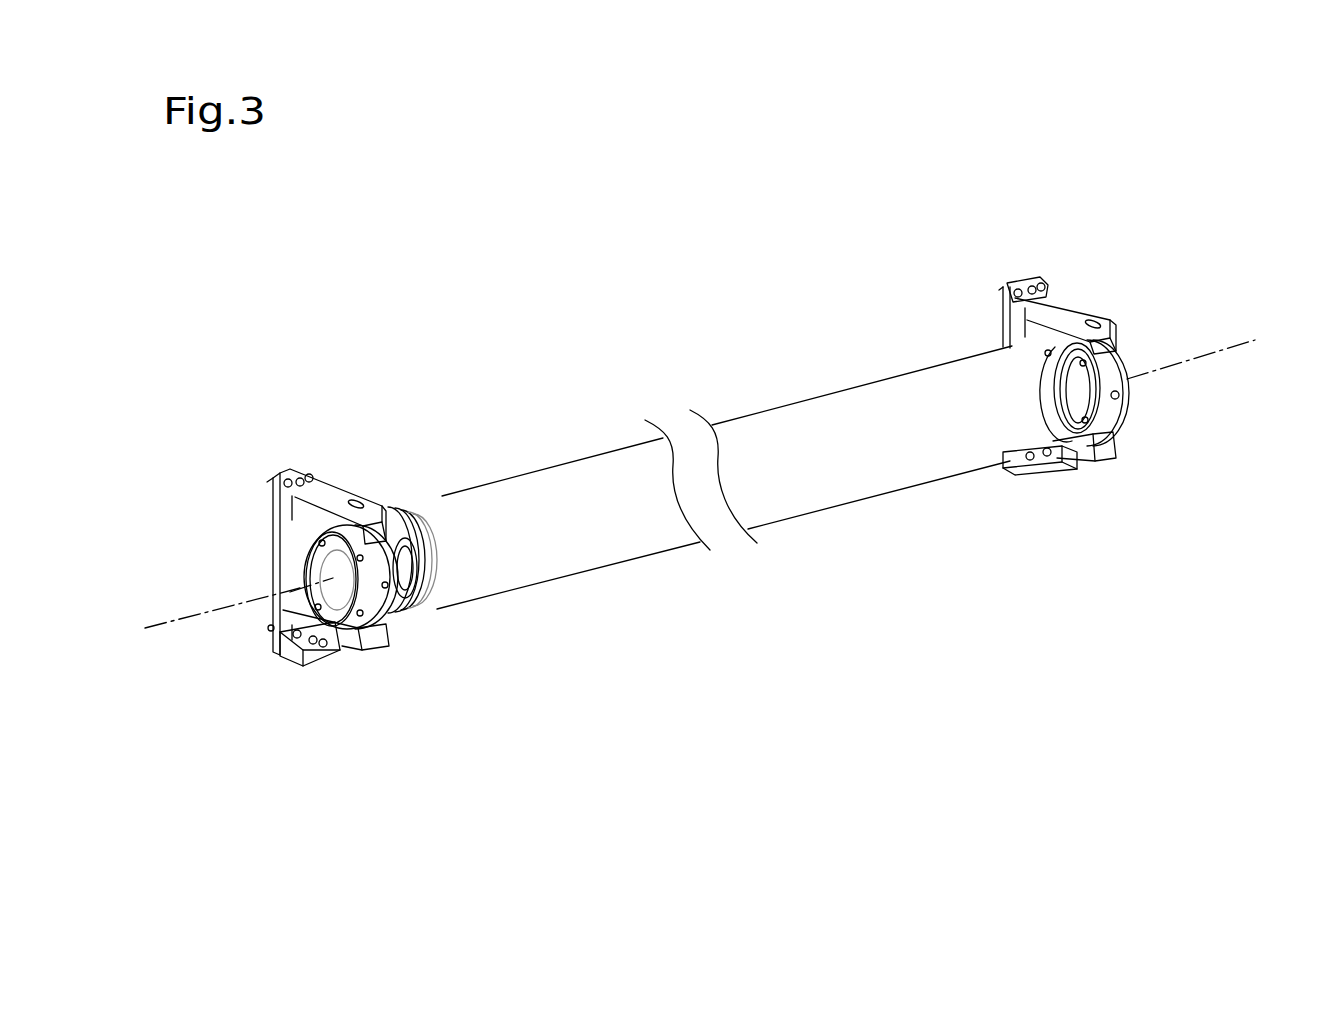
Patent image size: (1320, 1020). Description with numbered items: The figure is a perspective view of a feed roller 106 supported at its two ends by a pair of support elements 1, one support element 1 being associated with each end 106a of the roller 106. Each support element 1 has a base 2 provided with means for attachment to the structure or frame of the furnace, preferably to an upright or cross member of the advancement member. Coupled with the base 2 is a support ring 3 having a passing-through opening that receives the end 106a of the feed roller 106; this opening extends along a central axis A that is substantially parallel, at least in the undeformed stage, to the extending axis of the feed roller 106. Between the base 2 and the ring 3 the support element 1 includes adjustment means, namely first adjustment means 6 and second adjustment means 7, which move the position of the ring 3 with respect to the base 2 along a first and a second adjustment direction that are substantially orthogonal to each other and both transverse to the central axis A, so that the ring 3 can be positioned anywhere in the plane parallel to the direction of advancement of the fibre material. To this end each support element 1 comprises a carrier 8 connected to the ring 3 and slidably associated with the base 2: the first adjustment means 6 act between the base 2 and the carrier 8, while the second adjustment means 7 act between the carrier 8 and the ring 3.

The support element 1 is at (340, 487).
The base 2 is at (266, 513).
The support ring 3 is at (383, 554).
The first adjustment means 6 is at (323, 654).
The second adjustment means 7 is at (306, 564).
The carrier 8 is at (307, 613).
The feed roller 106 is at (770, 405).
The end of the roller 106a is at (400, 570).
The central axis A is at (173, 623).